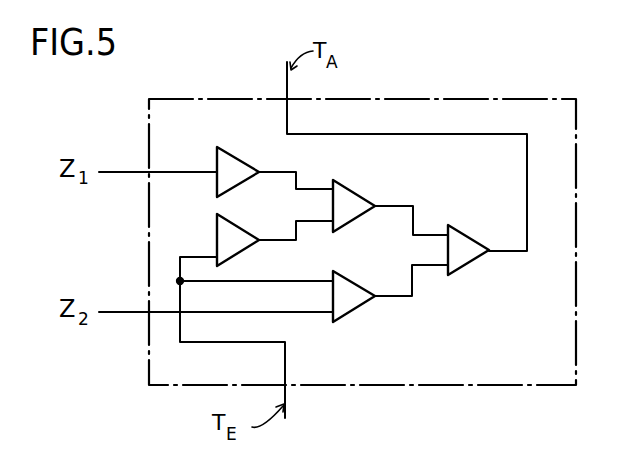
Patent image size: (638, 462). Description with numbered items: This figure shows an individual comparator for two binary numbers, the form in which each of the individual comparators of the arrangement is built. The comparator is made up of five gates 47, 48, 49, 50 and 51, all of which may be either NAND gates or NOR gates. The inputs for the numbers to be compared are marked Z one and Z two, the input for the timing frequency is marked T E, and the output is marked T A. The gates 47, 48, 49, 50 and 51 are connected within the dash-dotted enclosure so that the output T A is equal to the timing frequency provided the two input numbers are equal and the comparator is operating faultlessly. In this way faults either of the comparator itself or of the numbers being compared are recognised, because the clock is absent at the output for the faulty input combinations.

The gate 47 is at (220, 162).
The gate 48 is at (221, 226).
The gate 49 is at (344, 192).
The gate 50 is at (348, 304).
The gate 51 is at (468, 258).